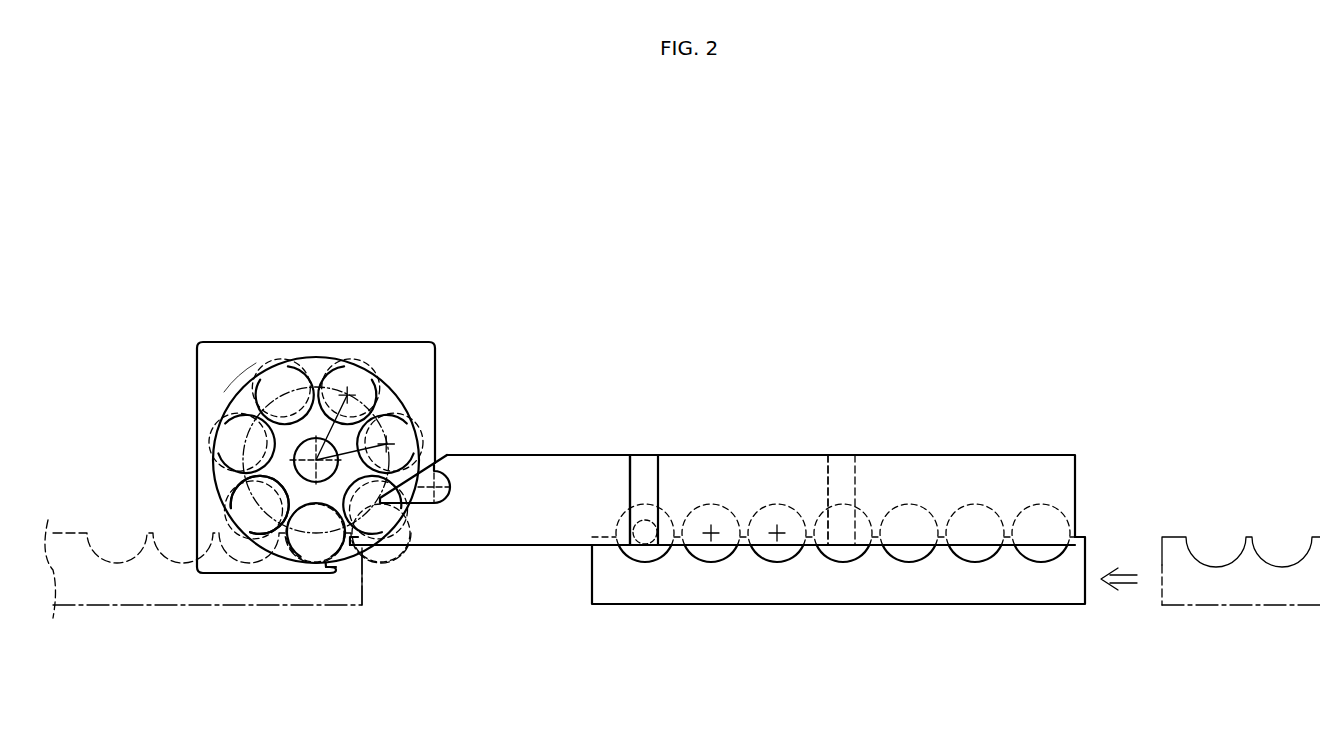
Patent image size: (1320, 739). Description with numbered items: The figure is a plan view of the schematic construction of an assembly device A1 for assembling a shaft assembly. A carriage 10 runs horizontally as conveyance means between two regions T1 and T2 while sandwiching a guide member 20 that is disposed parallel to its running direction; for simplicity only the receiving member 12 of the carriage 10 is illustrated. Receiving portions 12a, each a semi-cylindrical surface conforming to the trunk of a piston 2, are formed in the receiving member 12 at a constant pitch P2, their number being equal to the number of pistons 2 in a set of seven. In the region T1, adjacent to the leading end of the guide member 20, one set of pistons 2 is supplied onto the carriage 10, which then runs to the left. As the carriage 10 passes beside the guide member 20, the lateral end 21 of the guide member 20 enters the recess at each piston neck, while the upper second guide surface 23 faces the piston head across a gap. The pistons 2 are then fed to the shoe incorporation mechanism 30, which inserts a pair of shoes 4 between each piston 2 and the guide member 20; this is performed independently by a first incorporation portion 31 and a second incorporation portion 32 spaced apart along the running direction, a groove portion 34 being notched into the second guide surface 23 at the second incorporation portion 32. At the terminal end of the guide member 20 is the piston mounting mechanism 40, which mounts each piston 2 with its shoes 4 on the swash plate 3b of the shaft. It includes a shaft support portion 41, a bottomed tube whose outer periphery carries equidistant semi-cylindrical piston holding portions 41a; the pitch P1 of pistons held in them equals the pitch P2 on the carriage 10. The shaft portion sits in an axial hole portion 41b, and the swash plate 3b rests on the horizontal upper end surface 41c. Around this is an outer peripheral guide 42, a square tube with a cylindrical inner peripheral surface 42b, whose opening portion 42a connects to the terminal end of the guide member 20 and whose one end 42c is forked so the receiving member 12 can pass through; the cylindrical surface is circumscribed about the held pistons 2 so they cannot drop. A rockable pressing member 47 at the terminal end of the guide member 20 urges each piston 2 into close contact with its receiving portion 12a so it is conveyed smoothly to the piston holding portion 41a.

The piston 2 is at (1058, 508).
The swash plate 3b is at (318, 358).
The shoe 4 is at (633, 531).
The carriage 10 is at (647, 607).
The receiving member 12 is at (851, 595).
The receiving portion 12a is at (1040, 548).
The guide member 20 is at (1003, 452).
The lateral end 21 is at (514, 548).
The second guide surface 23 is at (930, 455).
The shoe incorporation mechanism 30 is at (788, 391).
The first incorporation portion 31 is at (836, 451).
The second incorporation portion 32 is at (654, 451).
The groove portion 34 is at (640, 455).
The piston mounting mechanism 40 is at (225, 330).
The shaft support portion 41 is at (283, 442).
The piston holding portion 41a is at (296, 486).
The hole portion 41b is at (308, 447).
The upper end surface 41c is at (293, 462).
The outer peripheral guide 42 is at (400, 355).
The opening portion 42a is at (375, 575).
The inner peripheral surface 42b is at (240, 400).
The one end 42c is at (328, 575).
The pressing member 47 is at (452, 480).
The assembly device A1 is at (657, 293).
The pitch P1 is at (393, 423).
The pitch P2 is at (712, 548).
The region T1 is at (1234, 477).
The region T2 is at (74, 484).